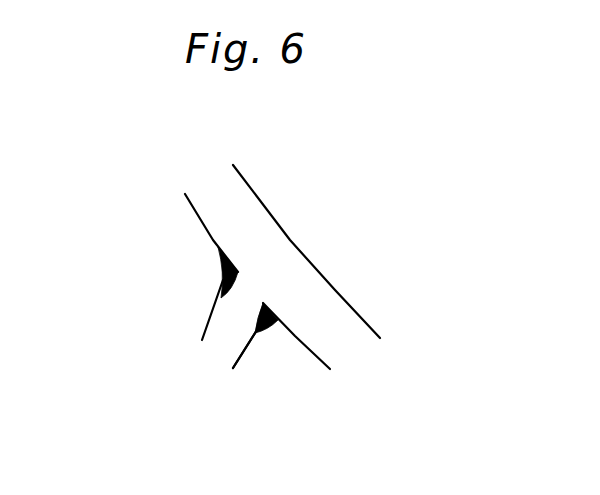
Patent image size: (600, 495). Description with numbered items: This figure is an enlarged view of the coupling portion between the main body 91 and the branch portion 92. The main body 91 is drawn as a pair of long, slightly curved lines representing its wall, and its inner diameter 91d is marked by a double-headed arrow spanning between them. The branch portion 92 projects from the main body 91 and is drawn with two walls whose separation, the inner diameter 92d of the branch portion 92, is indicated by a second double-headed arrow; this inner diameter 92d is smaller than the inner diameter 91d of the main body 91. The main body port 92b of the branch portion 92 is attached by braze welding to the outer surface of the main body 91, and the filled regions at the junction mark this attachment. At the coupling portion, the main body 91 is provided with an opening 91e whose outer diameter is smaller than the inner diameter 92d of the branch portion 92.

The main body 91 is at (295, 245).
The inner diameter of the main body 91d is at (203, 220).
The opening 91e is at (240, 275).
The branch portion 92 is at (182, 340).
The inner diameter of the branch portion 92d is at (244, 340).
The main body port 92b is at (252, 339).